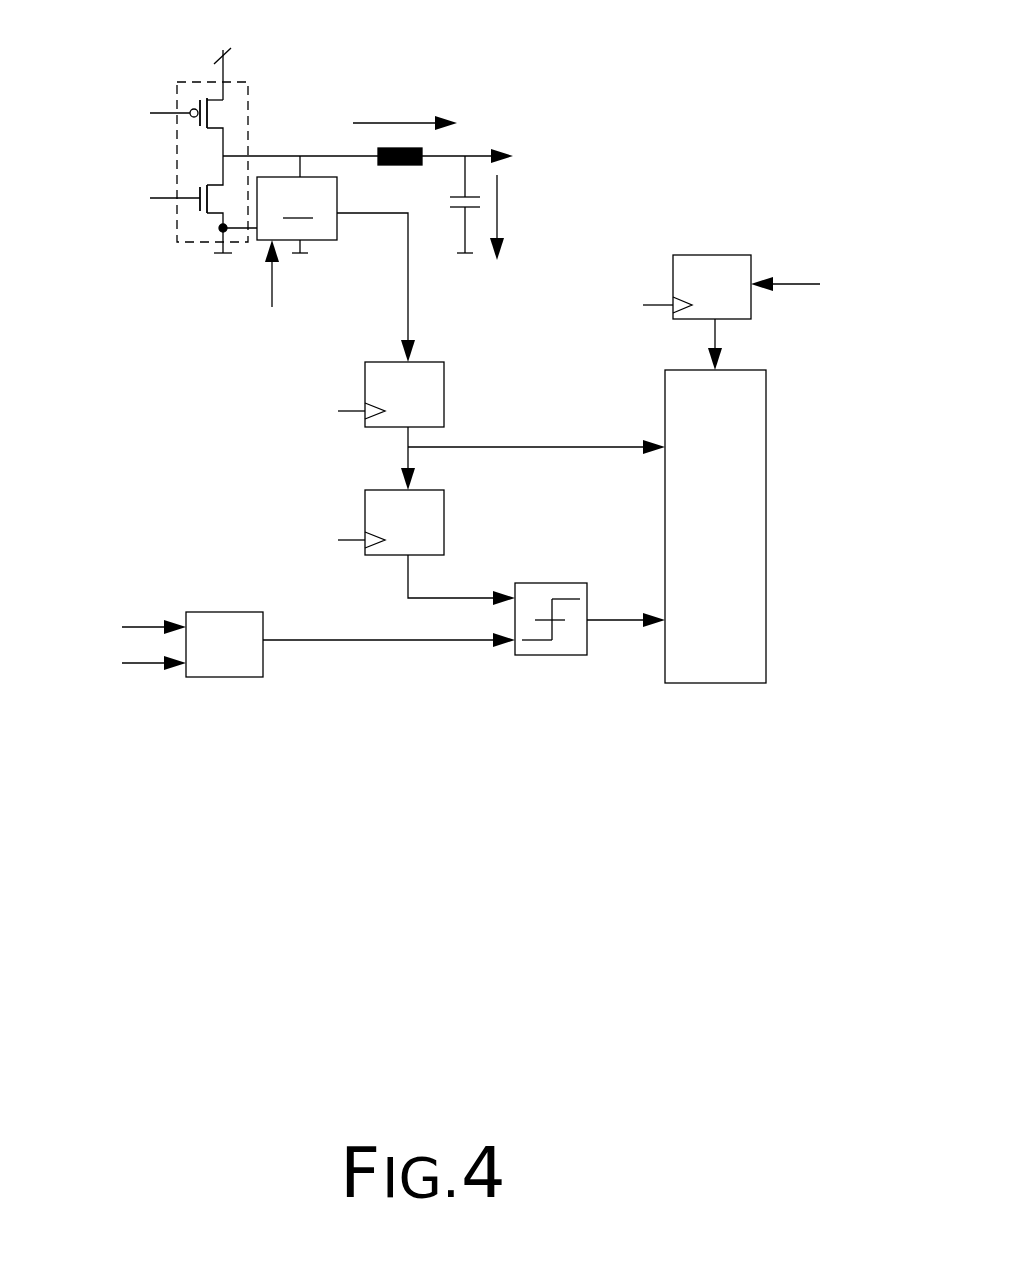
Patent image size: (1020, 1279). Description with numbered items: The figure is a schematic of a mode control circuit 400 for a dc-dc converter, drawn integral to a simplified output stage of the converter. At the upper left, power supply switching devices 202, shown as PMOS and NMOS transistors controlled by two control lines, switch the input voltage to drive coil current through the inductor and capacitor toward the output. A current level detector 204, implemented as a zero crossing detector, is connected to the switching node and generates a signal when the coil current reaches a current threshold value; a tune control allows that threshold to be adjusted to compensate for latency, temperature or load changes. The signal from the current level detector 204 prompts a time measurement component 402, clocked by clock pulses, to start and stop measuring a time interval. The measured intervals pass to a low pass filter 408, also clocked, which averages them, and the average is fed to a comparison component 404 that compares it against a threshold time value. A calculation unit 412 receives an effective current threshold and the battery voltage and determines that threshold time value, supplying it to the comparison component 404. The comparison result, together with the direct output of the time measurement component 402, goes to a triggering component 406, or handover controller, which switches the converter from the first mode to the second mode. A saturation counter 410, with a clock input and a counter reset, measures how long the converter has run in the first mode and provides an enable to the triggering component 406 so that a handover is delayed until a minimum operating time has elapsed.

The mode control circuit 400 is at (695, 51).
The power supply switching devices 202 is at (203, 243).
The current level detector 204 is at (293, 247).
The time measurement component 402 is at (445, 372).
The comparison component 404 is at (543, 583).
The triggering component 406 is at (766, 447).
The low pass filter 408 is at (445, 517).
The saturation counter 410 is at (740, 255).
The calculation unit 412 is at (222, 612).